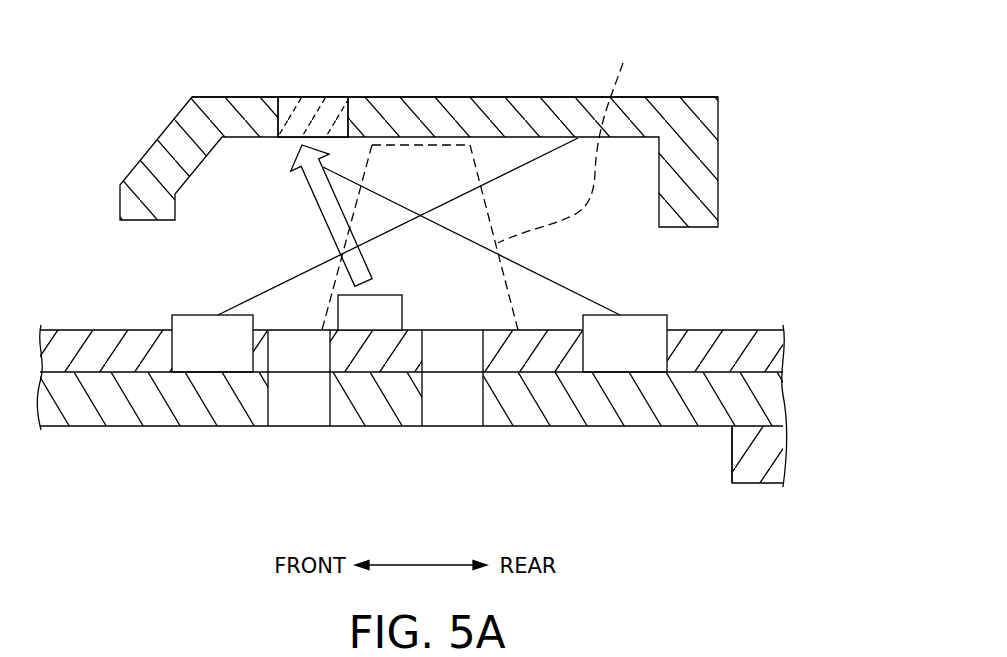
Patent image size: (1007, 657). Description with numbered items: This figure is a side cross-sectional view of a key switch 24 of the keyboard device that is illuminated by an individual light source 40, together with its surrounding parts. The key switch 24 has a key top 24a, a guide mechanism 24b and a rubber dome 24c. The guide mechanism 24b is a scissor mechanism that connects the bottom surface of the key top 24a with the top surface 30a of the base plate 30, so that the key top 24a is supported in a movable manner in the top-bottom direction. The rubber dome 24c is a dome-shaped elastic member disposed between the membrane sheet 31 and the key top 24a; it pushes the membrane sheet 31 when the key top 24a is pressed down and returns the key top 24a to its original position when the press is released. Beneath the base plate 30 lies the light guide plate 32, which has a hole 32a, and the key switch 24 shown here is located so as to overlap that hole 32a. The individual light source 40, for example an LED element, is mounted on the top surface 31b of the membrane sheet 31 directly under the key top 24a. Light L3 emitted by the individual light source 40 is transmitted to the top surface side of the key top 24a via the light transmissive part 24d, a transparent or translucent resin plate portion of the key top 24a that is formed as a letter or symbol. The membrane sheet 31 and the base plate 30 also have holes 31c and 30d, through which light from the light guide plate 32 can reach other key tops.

The key switch 24 is at (419, 170).
The key top 24a is at (463, 106).
The guide mechanism 24b is at (527, 163).
The rubber dome 24c is at (571, 138).
The light transmissive part 24d is at (318, 106).
The light L3 is at (322, 198).
The base plate 30 is at (446, 403).
The top surface of the base plate 30a is at (727, 370).
The hole of the base plate 30d is at (277, 412).
The membrane sheet 31 is at (446, 388).
The top surface of the membrane sheet 31b is at (700, 330).
The hole of the membrane sheet 31c is at (313, 367).
The light guide plate 32 is at (775, 495).
The hole of the light guide plate 32a is at (728, 463).
The individual light source 40 is at (372, 320).